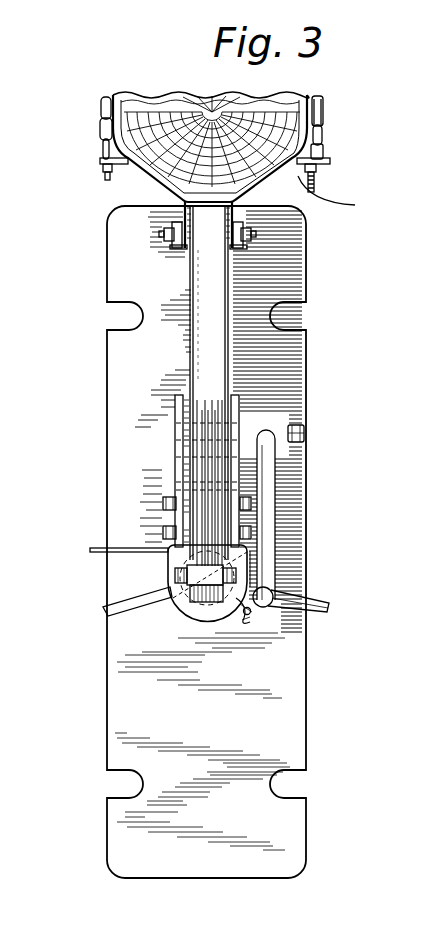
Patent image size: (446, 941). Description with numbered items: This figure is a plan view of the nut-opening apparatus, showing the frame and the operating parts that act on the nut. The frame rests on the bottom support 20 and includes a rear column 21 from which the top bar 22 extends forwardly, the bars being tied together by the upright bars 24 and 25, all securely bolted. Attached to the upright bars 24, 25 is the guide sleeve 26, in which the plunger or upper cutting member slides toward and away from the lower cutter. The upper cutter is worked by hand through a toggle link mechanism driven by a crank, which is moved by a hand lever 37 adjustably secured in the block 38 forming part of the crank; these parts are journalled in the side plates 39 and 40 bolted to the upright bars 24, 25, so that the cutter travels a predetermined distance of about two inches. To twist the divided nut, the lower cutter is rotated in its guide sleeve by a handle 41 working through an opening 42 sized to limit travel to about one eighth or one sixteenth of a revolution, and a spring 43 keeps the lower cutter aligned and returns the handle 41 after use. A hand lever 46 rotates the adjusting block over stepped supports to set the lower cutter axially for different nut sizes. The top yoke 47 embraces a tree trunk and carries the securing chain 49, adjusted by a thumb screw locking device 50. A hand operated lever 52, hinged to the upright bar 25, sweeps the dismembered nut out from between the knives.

The bottom support 20 is at (118, 710).
The rear column 21 is at (232, 258).
The top bar 22 is at (216, 318).
The upright bar 24 is at (186, 528).
The upright bar 25 is at (227, 533).
The guide sleeve 26 is at (180, 612).
The hand lever 37 is at (267, 489).
The block 38 is at (281, 421).
The side plate 39 is at (176, 403).
The side plate 40 is at (239, 401).
The handle 41 is at (329, 608).
The opening 42 is at (221, 634).
The spring 43 is at (248, 622).
The hand lever 46 is at (124, 611).
The top yoke 47 is at (237, 186).
The securing chain 49 is at (323, 102).
The thumb screw locking device 50 is at (318, 168).
The hand operated lever 52 is at (98, 553).